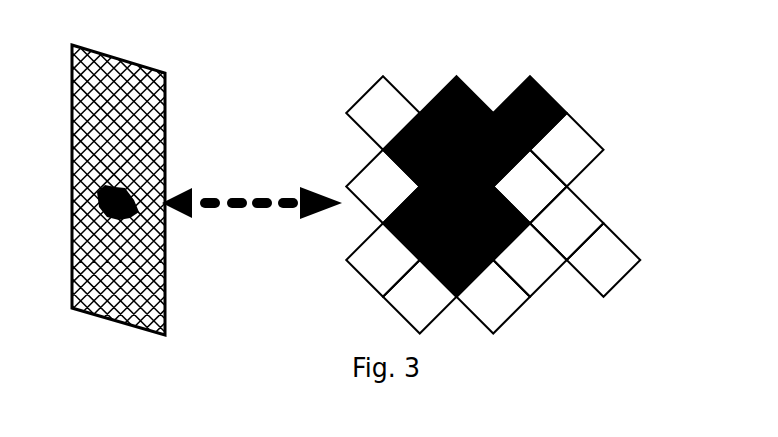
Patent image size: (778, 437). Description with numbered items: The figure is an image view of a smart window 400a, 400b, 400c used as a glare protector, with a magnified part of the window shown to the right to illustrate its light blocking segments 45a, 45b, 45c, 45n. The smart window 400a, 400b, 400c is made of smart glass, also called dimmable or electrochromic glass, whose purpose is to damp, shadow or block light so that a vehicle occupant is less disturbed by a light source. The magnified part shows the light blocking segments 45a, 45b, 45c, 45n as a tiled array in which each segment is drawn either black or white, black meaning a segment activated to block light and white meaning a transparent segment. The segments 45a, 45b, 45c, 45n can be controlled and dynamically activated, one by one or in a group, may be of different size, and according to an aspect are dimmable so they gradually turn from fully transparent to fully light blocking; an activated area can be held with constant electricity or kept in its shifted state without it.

The smart window 400a is at (232, 65).
The smart window 400b is at (118, 218).
The sensor array panel 400c is at (118, 218).
The light blocking segment 45a is at (382, 107).
The light blocking segment 45b is at (478, 93).
The light blocking segment 45c is at (552, 92).
The light blocking segment 45n is at (622, 238).